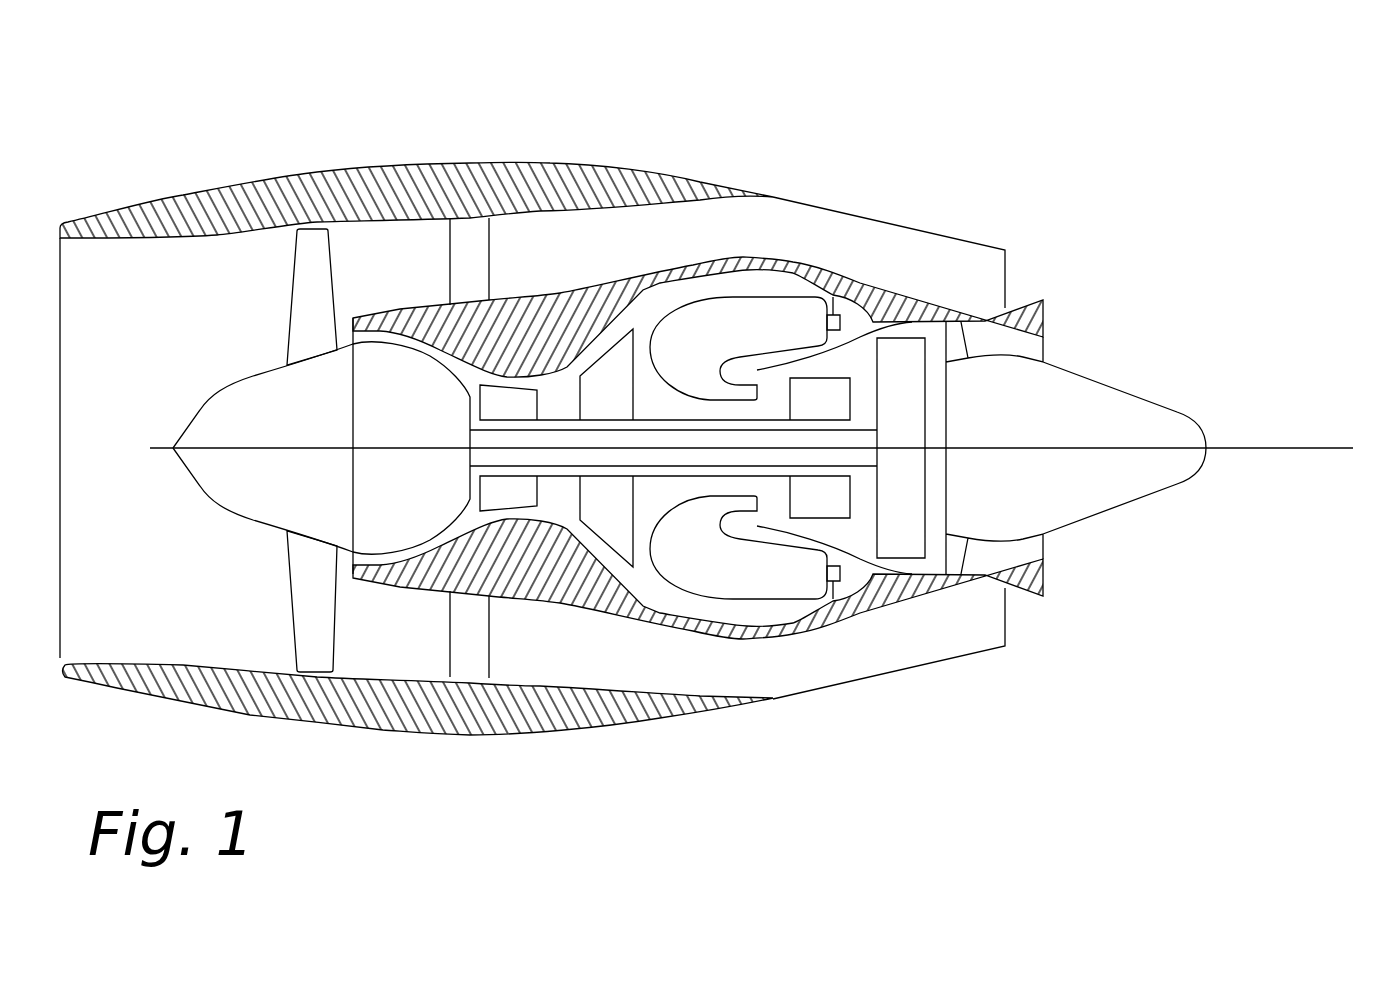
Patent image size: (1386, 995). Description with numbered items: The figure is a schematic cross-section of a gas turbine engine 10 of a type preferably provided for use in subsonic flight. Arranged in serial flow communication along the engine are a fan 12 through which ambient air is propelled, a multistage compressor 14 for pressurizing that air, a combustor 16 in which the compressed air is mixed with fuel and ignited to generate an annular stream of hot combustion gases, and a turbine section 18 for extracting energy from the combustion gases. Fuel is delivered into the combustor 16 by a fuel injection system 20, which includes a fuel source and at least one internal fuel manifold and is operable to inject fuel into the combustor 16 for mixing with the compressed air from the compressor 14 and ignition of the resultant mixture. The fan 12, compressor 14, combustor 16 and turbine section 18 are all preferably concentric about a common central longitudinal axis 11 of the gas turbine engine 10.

The gas turbine engine 10 is at (829, 158).
The central longitudinal axis 11 is at (1262, 448).
The fan 12 is at (310, 593).
The multistage compressor 14 is at (557, 393).
The combustor 16 is at (735, 297).
The turbine section 18 is at (862, 364).
The fuel injection system 20 is at (863, 300).